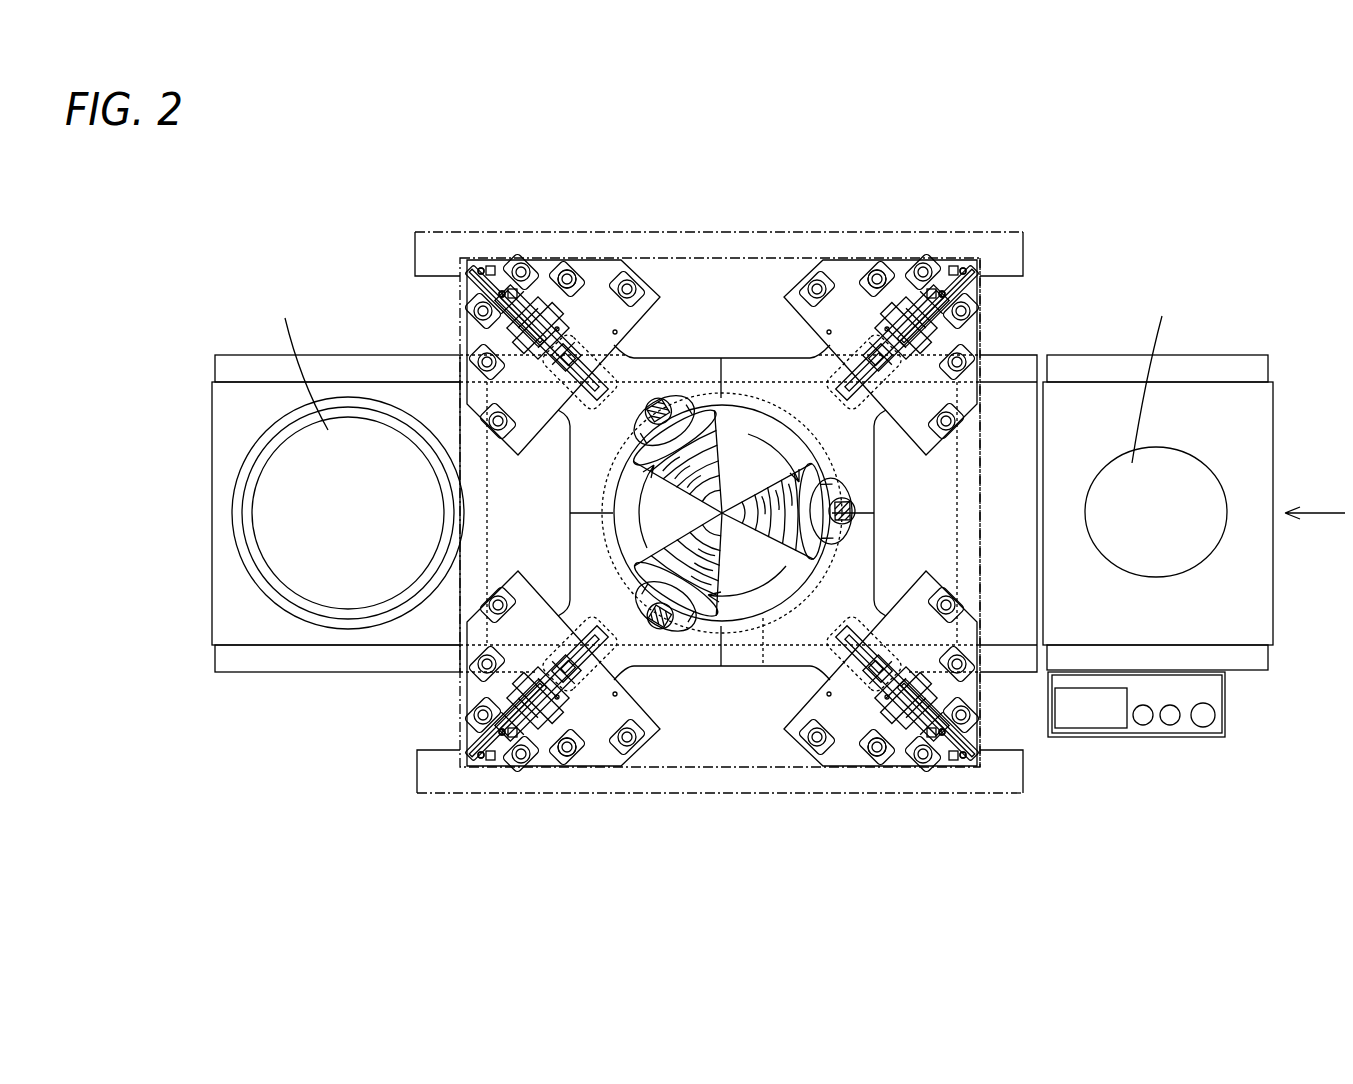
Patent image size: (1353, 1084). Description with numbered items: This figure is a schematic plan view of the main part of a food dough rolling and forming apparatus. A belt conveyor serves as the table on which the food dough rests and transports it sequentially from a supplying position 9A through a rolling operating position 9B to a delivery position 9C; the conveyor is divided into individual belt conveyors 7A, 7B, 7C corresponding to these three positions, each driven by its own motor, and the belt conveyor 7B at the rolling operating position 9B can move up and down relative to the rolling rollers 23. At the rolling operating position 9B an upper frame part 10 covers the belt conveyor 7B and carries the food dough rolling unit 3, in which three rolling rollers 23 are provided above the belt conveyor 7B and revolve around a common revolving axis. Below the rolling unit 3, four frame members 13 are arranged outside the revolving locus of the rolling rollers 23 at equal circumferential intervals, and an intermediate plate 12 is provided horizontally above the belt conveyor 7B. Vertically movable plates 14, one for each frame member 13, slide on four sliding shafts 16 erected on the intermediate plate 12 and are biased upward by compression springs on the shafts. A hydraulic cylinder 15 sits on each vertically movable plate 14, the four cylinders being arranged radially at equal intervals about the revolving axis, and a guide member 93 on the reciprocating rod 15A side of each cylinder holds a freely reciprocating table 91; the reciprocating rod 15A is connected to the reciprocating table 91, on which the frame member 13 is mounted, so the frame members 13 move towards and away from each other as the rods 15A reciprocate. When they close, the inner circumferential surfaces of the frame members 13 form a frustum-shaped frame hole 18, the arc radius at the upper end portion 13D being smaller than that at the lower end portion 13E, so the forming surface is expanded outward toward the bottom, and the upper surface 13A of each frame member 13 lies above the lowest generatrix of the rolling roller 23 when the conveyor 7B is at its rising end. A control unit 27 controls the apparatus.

The food dough rolling unit 3 is at (724, 320).
The belt conveyor 7A is at (1228, 366).
The belt conveyor 7B is at (997, 367).
The belt conveyor 7C is at (365, 370).
The supplying position 9A is at (1168, 766).
The rolling operating position 9B is at (744, 852).
The delivery position 9C is at (292, 708).
The upper frame part 10 is at (393, 259).
The intermediate plate 12 is at (982, 470).
The frame member 13 is at (582, 481).
The upper surface 13A is at (856, 575).
The upper end portion 13D is at (792, 590).
The lower end portion 13E is at (765, 662).
The vertically movable plate 14 is at (593, 275).
The hydraulic cylinder 15 is at (487, 268).
The reciprocating rod 15A is at (522, 270).
The sliding shaft 16 is at (570, 274).
The frame hole 18 is at (633, 545).
The rolling roller 23 is at (700, 397).
The control unit 27 is at (1215, 735).
The reciprocating table 91 is at (615, 330).
The guide member 93 is at (557, 327).